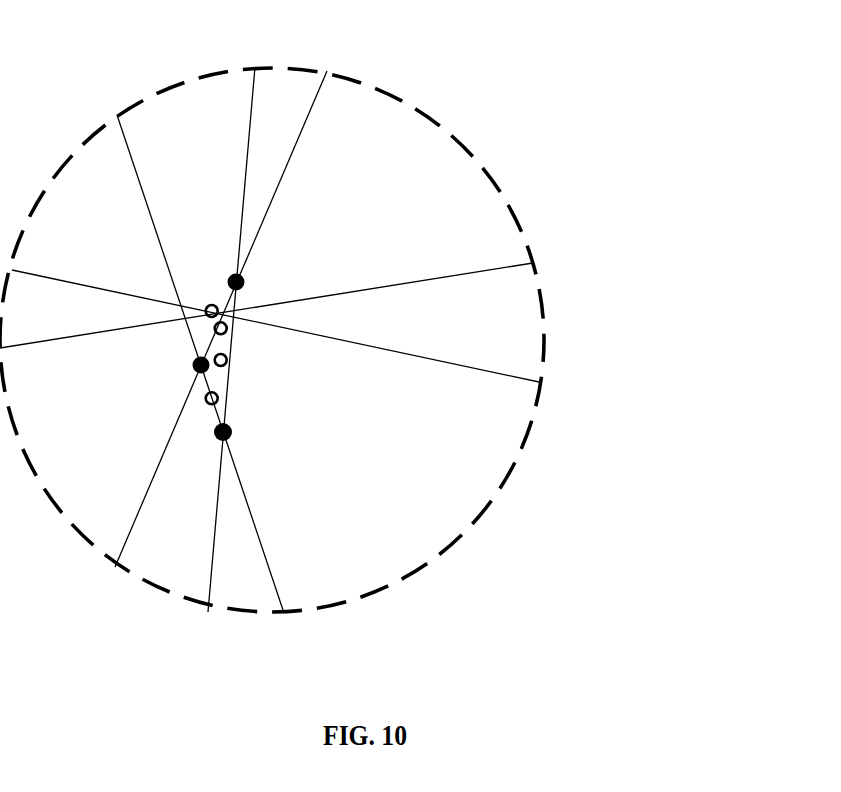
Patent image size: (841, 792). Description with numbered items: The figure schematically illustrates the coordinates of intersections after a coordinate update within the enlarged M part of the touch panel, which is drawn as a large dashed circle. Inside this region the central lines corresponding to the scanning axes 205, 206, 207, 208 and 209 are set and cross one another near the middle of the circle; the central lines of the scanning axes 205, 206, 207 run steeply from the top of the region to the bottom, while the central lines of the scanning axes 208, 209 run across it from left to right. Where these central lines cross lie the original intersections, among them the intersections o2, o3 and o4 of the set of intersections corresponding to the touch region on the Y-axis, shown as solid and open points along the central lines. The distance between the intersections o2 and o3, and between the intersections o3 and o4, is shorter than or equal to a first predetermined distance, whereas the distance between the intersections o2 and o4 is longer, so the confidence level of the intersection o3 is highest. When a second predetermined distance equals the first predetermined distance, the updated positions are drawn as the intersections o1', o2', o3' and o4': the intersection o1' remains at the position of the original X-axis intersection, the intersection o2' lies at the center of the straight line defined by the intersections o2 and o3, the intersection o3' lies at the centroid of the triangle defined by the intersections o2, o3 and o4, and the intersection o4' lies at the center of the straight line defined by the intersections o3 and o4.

The M part M is at (463, 153).
The scanning axis 205 is at (286, 283).
The scanning axis 206 is at (208, 306).
The scanning axis 207 is at (155, 330).
The scanning axis 208 is at (338, 274).
The scanning axis 209 is at (344, 364).
The intersection o2 is at (264, 265).
The intersection o4 is at (256, 427).
The updated intersection o1' is at (200, 283).
The updated intersection o2' is at (181, 354).
The updated intersection o3' is at (265, 360).
The intersection o3 is at (242, 394).
The updated intersection o4' is at (160, 423).